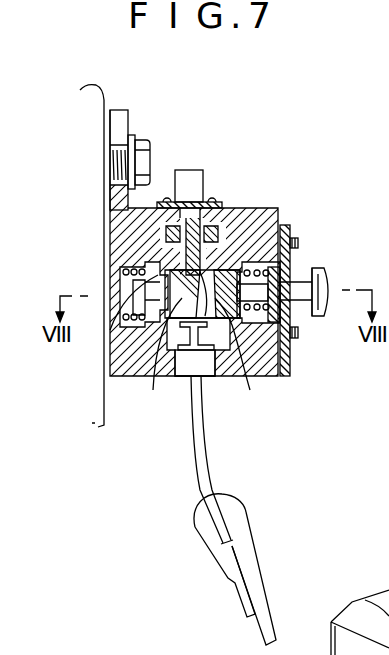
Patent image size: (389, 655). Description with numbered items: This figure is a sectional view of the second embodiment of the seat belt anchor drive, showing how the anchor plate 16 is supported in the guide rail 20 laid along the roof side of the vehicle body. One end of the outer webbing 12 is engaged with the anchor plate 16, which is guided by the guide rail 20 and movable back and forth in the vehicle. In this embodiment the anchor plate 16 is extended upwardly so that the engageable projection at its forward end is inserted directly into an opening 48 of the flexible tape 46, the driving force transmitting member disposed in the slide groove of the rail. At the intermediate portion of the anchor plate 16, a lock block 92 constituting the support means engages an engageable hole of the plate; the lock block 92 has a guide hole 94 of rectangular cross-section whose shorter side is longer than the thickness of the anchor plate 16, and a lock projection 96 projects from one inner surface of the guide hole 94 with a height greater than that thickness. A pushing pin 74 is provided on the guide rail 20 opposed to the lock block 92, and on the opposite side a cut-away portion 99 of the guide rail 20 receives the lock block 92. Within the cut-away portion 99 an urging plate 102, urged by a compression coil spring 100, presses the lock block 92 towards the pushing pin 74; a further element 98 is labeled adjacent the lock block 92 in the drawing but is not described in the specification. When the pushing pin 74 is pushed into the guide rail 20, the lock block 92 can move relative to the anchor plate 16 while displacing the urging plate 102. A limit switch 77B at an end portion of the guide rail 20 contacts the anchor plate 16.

The outer webbing 12 is at (256, 592).
The anchor plate 16 is at (210, 462).
The guide rail 20 is at (268, 218).
The flexible tape 46 is at (217, 238).
The opening 48 is at (203, 225).
The pushing pin 74 is at (323, 262).
The limit switch 77B is at (192, 168).
The lock block 92 is at (112, 373).
The guide hole 94 is at (372, 606).
The lock projection 96 is at (208, 352).
The wedge 98 is at (240, 352).
The cut-away portion 99 is at (160, 376).
The compression coil spring 100 is at (138, 288).
The urging plate 102 is at (125, 278).